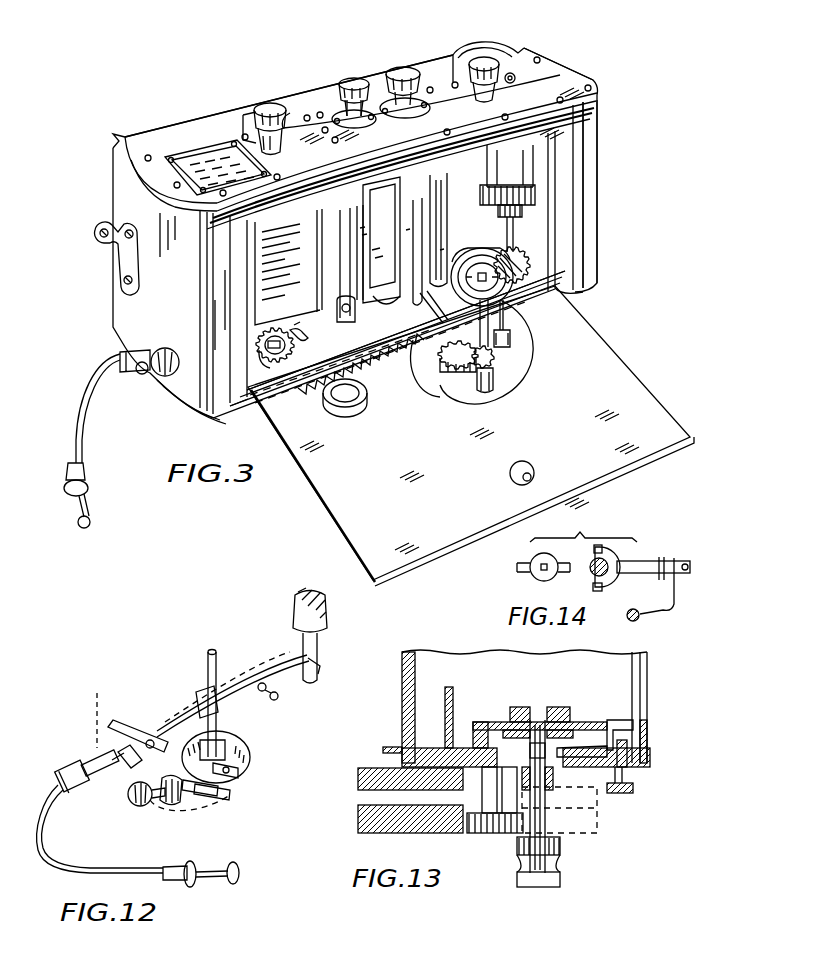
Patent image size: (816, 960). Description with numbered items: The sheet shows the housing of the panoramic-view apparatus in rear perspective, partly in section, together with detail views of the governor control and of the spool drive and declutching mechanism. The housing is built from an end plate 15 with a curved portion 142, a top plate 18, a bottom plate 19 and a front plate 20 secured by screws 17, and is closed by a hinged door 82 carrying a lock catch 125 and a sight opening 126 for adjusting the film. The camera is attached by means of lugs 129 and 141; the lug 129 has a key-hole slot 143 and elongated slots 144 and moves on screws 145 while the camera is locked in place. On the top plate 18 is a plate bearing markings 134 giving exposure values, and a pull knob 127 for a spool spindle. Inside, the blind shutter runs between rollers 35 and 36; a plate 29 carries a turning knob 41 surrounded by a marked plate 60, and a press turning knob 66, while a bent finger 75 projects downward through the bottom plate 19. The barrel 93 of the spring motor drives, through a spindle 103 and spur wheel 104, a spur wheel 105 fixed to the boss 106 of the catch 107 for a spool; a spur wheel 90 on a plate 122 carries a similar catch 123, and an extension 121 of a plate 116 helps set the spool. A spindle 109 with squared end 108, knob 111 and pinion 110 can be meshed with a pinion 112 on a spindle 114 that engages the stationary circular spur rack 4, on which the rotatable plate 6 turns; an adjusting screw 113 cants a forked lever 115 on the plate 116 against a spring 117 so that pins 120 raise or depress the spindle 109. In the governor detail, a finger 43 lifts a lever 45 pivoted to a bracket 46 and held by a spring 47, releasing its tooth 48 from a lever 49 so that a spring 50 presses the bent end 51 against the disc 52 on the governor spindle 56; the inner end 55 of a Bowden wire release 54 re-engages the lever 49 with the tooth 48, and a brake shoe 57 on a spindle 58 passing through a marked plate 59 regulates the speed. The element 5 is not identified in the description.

In FIG. 13, the stationary circular spur rack 4 is at (367, 820).
In FIG. 3, the guard 5 is at (441, 380).
In FIG. 13, the plate 6 is at (363, 782).
In FIG. 3, the end plate 15 is at (598, 124).
In FIG. 3, the screws 17 is at (573, 73).
In FIG. 3, the top plate 18 is at (561, 86).
In FIG. 3, the bottom plate 19 is at (304, 352).
In FIG. 13, the bottom plate 19 is at (427, 747).
In FIG. 13, the front plate 20 is at (410, 708).
In FIG. 3, the plate 29 is at (313, 112).
In FIG. 3, the roller 35 is at (320, 238).
In FIG. 3, the roller 36 is at (442, 222).
In FIG. 3, the turning knob 41 is at (353, 80).
In FIG. 12, the projecting finger 43 is at (310, 664).
In FIG. 12, the lever 45 is at (270, 660).
In FIG. 12, the bracket 46 is at (200, 697).
In FIG. 12, the spring 47 is at (263, 690).
In FIG. 12, the tooth 48 is at (127, 773).
In FIG. 12, the lever 49 is at (117, 723).
In FIG. 12, the spring 50 is at (197, 799).
In FIG. 12, the bent end 51 is at (223, 792).
In FIG. 12, the disc 52 is at (247, 743).
In FIG. 3, the Bowden wire release 54 is at (72, 427).
In FIG. 12, the Bowden wire release 54 is at (70, 867).
In FIG. 12, the inner end 55 is at (102, 750).
In FIG. 12, the spindle 56 is at (207, 657).
In FIG. 12, the brake shoe 57 is at (236, 769).
In FIG. 12, the spindle 58 is at (227, 788).
In FIG. 3, the plate 59 is at (167, 347).
In FIG. 12, the plate 59 is at (168, 796).
In FIG. 3, the plate 60 is at (334, 107).
In FIG. 3, the press turning knob 66 is at (399, 72).
In FIG. 3, the bent finger 75 is at (413, 376).
In FIG. 3, the hinged door 82 is at (471, 436).
In FIG. 3, the spur wheel 90 is at (272, 372).
In FIG. 3, the barrel 93 is at (525, 163).
In FIG. 3, the spindle 103 is at (517, 235).
In FIG. 3, the spur wheel 104 is at (529, 262).
In FIG. 13, the spur wheel 105 is at (503, 720).
In FIG. 13, the boss 106 is at (553, 710).
In FIG. 3, the catch 107 is at (480, 268).
In FIG. 13, the catch 107 is at (515, 707).
In FIG. 14, the catch 107 is at (532, 568).
In FIG. 13, the squared end 108 is at (540, 708).
In FIG. 3, the spindle 109 is at (496, 349).
In FIG. 13, the spindle 109 is at (540, 807).
In FIG. 3, the spur pinion 110 is at (494, 365).
In FIG. 13, the spur pinion 110 is at (557, 853).
In FIG. 3, the turning knob or button 111 is at (490, 392).
In FIG. 13, the turning knob or button 111 is at (540, 885).
In FIG. 3, the spur pinion 112 is at (457, 382).
In FIG. 13, the spur pinion 112 is at (512, 833).
In FIG. 3, the adjusting screw 113 is at (511, 337).
In FIG. 13, the adjusting screw 113 is at (633, 787).
In FIG. 13, the spindle 114 is at (493, 787).
In FIG. 13, the forked lever 115 is at (577, 752).
In FIG. 14, the forked lever 115 is at (637, 563).
In FIG. 13, the plate 116 is at (587, 720).
In FIG. 13, the spring 117 is at (563, 748).
In FIG. 14, the spring 117 is at (676, 606).
In FIG. 14, the pins 120 is at (603, 548).
In FIG. 3, the extension 121 is at (458, 257).
In FIG. 13, the extension 121 is at (448, 692).
In FIG. 3, the plate 122 is at (266, 322).
In FIG. 3, the catch 123 is at (288, 326).
In FIG. 3, the lock catch 125 is at (521, 460).
In FIG. 3, the sight opening 126 is at (347, 397).
In FIG. 3, the pull knob 127 is at (262, 105).
In FIG. 3, the lug 129 is at (113, 248).
In FIG. 3, the markings 134 is at (211, 152).
In FIG. 3, the lug 141 is at (247, 118).
In FIG. 3, the curved portion 142 is at (494, 50).
In FIG. 3, the key-hole slot 143 is at (100, 235).
In FIG. 3, the elongated slots 144 is at (121, 289).
In FIG. 3, the screws 145 is at (153, 258).